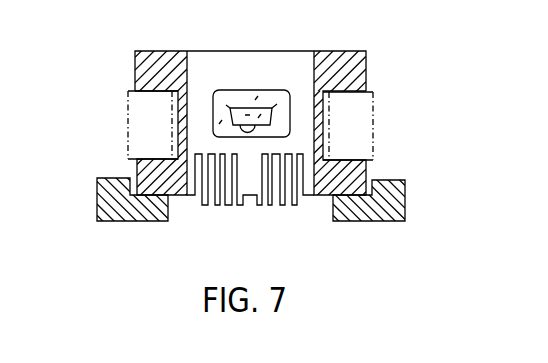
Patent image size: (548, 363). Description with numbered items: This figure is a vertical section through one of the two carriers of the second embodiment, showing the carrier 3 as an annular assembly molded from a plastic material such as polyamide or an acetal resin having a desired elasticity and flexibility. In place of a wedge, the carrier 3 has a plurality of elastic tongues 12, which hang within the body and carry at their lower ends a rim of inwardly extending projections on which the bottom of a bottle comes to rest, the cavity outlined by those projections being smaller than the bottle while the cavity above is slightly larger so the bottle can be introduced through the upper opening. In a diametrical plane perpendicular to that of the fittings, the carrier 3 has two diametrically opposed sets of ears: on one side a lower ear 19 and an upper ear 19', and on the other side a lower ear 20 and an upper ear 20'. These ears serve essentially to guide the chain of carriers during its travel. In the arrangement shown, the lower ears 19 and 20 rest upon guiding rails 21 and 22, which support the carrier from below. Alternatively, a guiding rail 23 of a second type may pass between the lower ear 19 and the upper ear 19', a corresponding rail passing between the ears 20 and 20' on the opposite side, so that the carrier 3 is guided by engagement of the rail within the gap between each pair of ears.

The carrier 3 is at (108, 46).
The elastic tongues 12 is at (297, 208).
The lower ear 19 is at (375, 144).
The upper ear 19' is at (359, 69).
The lower ear 20 is at (132, 145).
The upper ear 20' is at (174, 68).
The guiding rail 21 is at (378, 222).
The guiding rail 22 is at (133, 221).
The guiding rail 23 is at (365, 108).